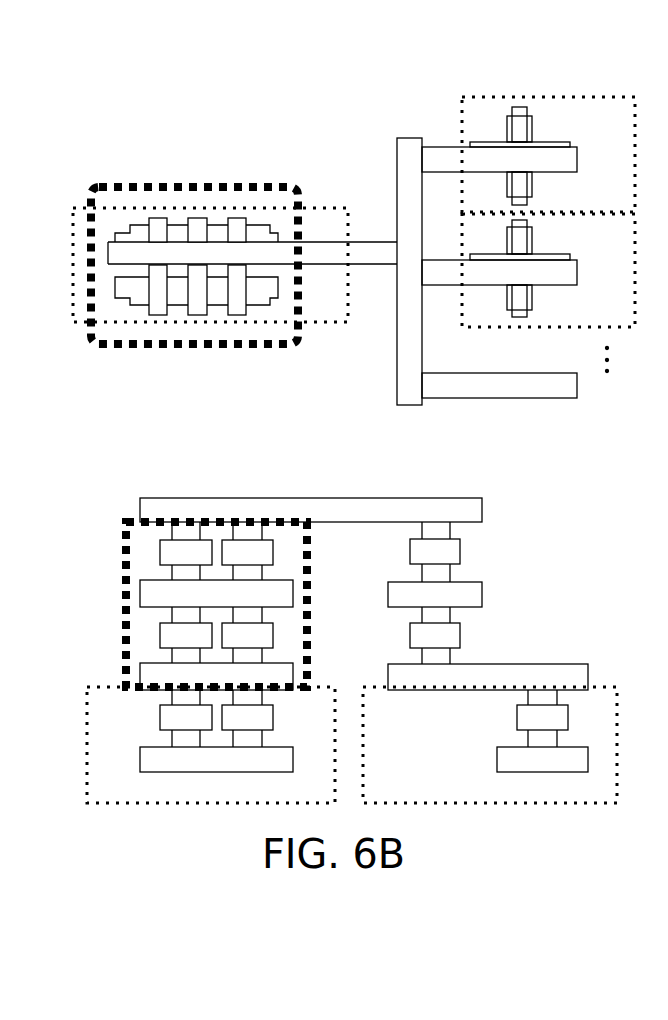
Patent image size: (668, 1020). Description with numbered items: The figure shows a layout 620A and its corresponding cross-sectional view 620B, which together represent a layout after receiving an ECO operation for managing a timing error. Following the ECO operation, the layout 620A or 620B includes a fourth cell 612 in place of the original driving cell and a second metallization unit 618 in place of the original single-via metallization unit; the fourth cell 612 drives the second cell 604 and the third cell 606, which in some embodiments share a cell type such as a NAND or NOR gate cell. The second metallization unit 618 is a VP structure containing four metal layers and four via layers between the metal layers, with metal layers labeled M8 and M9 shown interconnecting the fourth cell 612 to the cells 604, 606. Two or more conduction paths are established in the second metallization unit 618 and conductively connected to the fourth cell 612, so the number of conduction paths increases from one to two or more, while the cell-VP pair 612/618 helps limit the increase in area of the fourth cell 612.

The layout 620A is at (636, 63).
The cross-sectional view 620B is at (637, 493).
The second cell 604 is at (623, 200).
The third cell 606 is at (623, 313).
The fourth cell 612 is at (340, 313).
The second metallization unit 618 is at (189, 178).
The metal layer M8 interconnect M8 is at (377, 250).
The metal layer M9 interconnect M9 is at (410, 150).